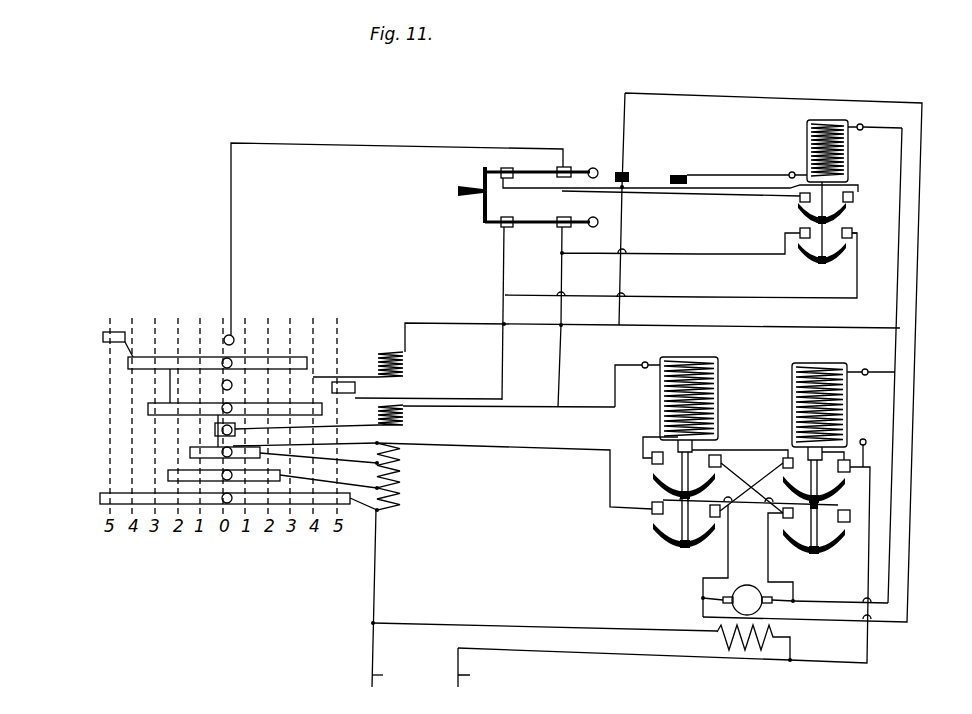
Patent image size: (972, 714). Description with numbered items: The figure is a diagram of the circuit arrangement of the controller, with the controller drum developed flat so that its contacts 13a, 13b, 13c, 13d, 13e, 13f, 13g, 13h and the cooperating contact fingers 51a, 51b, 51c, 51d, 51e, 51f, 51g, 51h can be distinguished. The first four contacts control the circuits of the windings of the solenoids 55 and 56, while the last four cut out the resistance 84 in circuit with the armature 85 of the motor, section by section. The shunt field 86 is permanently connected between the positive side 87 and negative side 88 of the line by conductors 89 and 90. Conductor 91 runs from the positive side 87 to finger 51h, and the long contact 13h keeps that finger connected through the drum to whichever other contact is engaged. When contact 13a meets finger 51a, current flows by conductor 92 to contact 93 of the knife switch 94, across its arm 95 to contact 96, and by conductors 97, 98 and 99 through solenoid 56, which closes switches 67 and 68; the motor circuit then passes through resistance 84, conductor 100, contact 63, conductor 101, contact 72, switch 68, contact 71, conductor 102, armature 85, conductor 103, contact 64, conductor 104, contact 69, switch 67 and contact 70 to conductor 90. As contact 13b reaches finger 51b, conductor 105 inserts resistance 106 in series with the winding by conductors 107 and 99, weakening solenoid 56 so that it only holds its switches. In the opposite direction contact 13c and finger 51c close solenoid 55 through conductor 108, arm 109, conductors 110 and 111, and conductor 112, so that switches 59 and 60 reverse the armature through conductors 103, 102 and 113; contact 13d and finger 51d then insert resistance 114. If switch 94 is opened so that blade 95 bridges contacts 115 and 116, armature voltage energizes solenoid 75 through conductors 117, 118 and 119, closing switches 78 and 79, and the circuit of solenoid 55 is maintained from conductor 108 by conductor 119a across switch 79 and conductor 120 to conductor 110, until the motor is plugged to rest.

The contact 13a is at (104, 333).
The contact 13b is at (143, 358).
The contact 13c is at (347, 382).
The contact 13d is at (150, 404).
The contact 13e is at (216, 428).
The contact 13f is at (191, 448).
The contact 13g is at (168, 473).
The contact 13h is at (100, 497).
The contact finger 51a is at (230, 335).
The contact finger 51b is at (229, 358).
The contact finger 51c is at (229, 380).
The contact finger 51d is at (229, 403).
The contact finger 51e is at (234, 426).
The contact finger 51f is at (224, 457).
The contact finger 51g is at (224, 480).
The contact finger 51h is at (228, 503).
The solenoid 55 is at (718, 382).
The solenoid 56 is at (847, 398).
The switch 59 is at (657, 478).
The switch 60 is at (670, 538).
The contact 63 is at (652, 510).
The contact 64 is at (714, 520).
The switch 67 is at (848, 486).
The switch 68 is at (848, 533).
The contact 69 is at (786, 458).
The contact 70 is at (850, 459).
The contact 71 is at (784, 522).
The contact 72 is at (855, 506).
The solenoid 75 is at (850, 153).
The switch 78 is at (850, 207).
The switch 79 is at (849, 250).
The resistance 84 is at (400, 483).
The armature 85 is at (748, 585).
The shunt field 86 is at (791, 634).
The positive side 87 is at (376, 677).
The negative side 88 is at (466, 668).
The conductor 89 is at (637, 620).
The conductor 90 is at (852, 514).
The conductor 91 is at (373, 590).
The conductor 92 is at (440, 150).
The contact 93 is at (567, 167).
The switch 94 is at (488, 167).
The arm 95 is at (533, 170).
The contact 96 is at (506, 189).
The conductor 97 is at (592, 219).
The conductor 98 is at (625, 243).
The conductor 99 is at (769, 323).
The conductor 100 is at (585, 446).
The conductor 101 is at (760, 508).
The conductor 102 is at (773, 570).
The conductor 103 is at (716, 572).
The conductor 104 is at (758, 473).
The conductor 105 is at (313, 338).
The resistance 106 is at (403, 360).
The conductor 107 is at (474, 316).
The conductor 108 is at (466, 392).
The arm 109 is at (541, 227).
The conductor 110 is at (562, 293).
The conductor 111 is at (580, 408).
The conductor 112 is at (722, 449).
The conductor 113 is at (722, 457).
The resistance 114 is at (403, 421).
The contact 115 is at (627, 172).
The contact 116 is at (673, 175).
The conductor 117 is at (890, 587).
The conductor 118 is at (765, 163).
The conductor 119 is at (925, 267).
The conductor 119a is at (765, 290).
The conductor 120 is at (742, 247).